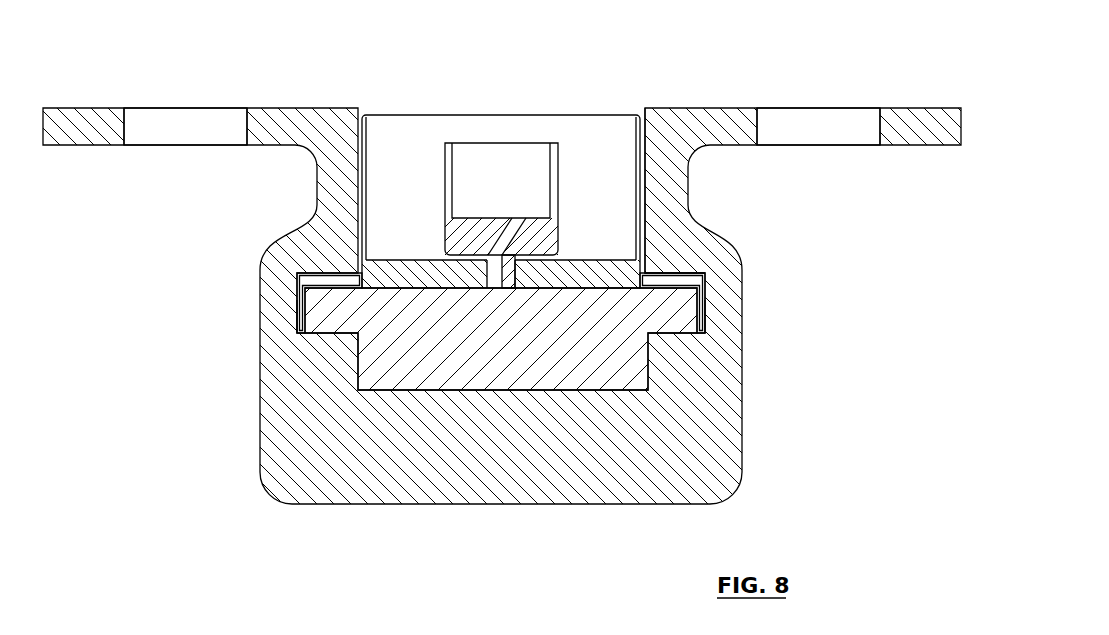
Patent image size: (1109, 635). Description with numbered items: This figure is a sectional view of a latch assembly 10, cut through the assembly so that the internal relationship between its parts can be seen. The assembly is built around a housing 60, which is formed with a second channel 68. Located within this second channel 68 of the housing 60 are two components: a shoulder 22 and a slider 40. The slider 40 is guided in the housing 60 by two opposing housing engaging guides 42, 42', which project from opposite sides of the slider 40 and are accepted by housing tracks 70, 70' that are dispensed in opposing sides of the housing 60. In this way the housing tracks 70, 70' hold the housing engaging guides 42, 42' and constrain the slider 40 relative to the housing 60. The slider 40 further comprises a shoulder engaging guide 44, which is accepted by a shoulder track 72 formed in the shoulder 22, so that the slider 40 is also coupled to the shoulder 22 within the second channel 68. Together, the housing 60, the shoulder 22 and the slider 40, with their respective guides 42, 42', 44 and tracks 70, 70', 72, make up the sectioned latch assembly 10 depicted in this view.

The latch assembly 10 is at (735, 60).
The shoulder 22 is at (399, 89).
The slider 40 is at (665, 387).
The housing engaging guide 42 is at (281, 302).
The housing engaging guide 42' is at (724, 302).
The shoulder engaging guide 44 is at (495, 230).
The housing 60 is at (237, 473).
The second channel 68 is at (643, 187).
The housing track 70 is at (240, 331).
The housing track 70' is at (769, 326).
The shoulder track 72 is at (478, 273).